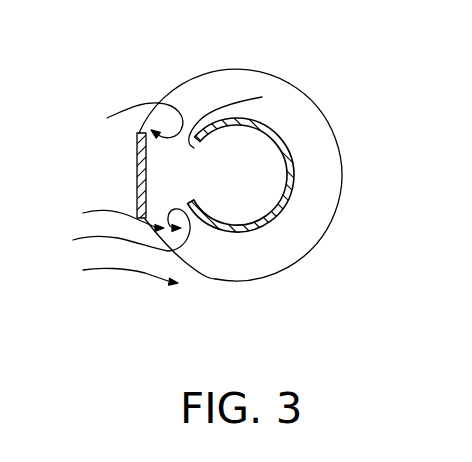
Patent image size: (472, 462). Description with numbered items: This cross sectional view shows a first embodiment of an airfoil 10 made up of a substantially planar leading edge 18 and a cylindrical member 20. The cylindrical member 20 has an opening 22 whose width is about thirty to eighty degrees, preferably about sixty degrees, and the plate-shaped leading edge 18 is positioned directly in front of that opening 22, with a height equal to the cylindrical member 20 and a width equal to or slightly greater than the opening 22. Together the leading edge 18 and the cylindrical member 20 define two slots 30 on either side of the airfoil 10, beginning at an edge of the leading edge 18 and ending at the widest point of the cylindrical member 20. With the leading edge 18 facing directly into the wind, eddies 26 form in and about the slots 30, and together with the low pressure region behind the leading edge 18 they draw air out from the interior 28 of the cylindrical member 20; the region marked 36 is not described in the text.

The airfoil 10 is at (328, 316).
The substantially planar leading edge 18 is at (139, 192).
The cylindrical member 20 is at (289, 159).
The opening 22 is at (262, 97).
The eddies 26 is at (192, 268).
The interior 28 is at (267, 190).
The slots 30 is at (150, 142).
The body wall 36 is at (306, 114).